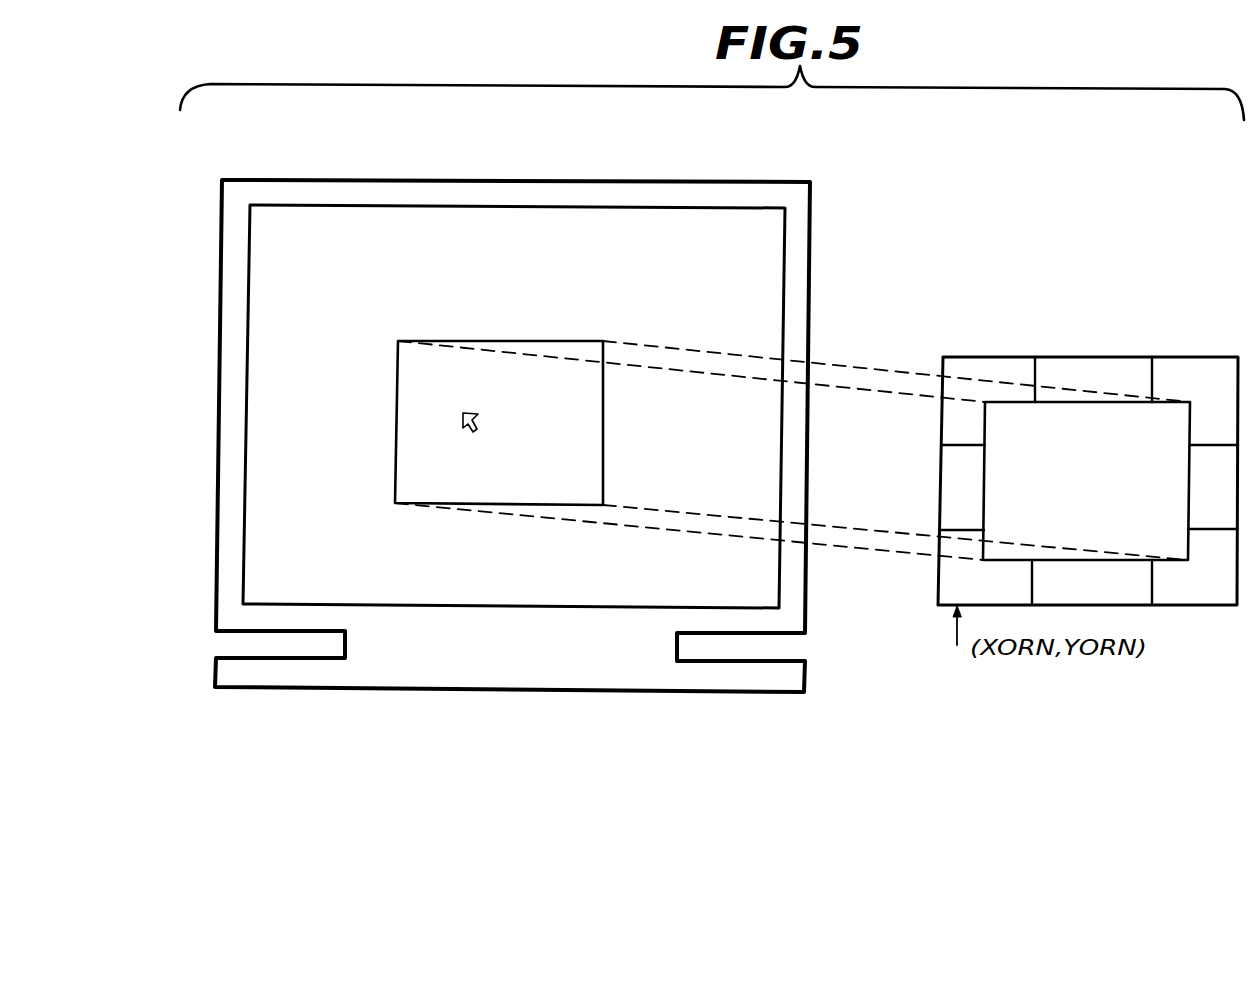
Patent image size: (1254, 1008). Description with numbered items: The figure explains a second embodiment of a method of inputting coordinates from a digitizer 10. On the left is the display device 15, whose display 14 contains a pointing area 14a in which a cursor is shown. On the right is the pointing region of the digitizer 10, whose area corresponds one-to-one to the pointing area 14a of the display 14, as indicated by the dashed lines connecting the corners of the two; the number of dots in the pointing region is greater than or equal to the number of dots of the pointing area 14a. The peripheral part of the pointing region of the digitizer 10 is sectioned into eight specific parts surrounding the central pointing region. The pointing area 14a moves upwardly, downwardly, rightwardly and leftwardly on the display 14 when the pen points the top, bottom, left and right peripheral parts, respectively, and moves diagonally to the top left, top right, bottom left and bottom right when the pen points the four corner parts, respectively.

The display device 15 is at (761, 180).
The display 14 is at (777, 279).
The pointing area 14a is at (605, 458).
The digitizer 10 is at (1181, 362).